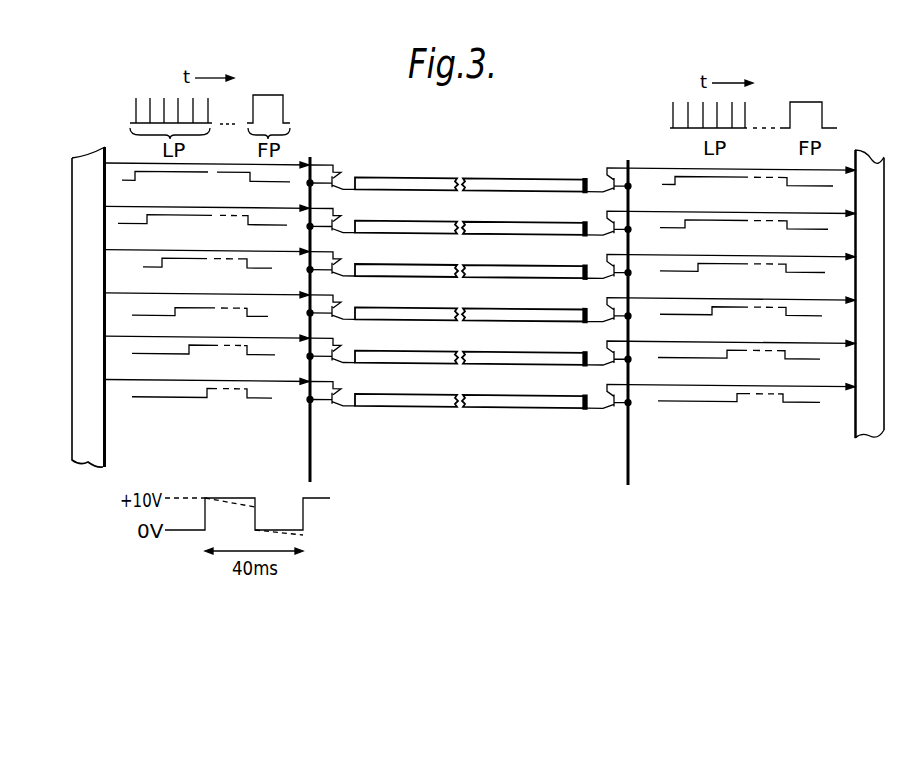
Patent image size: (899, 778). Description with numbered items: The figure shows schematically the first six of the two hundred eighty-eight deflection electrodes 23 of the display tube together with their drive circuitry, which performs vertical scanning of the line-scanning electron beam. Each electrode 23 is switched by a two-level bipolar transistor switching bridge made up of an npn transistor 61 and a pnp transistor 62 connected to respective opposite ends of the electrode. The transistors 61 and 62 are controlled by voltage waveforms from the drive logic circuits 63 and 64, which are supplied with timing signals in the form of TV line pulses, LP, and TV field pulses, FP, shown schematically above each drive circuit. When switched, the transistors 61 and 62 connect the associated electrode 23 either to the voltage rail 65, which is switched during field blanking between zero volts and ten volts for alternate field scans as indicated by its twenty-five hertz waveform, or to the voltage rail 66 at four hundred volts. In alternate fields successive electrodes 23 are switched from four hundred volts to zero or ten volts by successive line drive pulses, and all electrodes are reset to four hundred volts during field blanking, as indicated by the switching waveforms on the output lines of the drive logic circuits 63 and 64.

The electrode 23 is at (410, 263).
The npn transistor 61 is at (342, 210).
The pnp transistor 62 is at (596, 170).
The drive logic circuit 63 is at (104, 435).
The drive logic circuit 64 is at (860, 425).
The voltage rail 65 is at (308, 424).
The voltage rail 66 is at (628, 435).